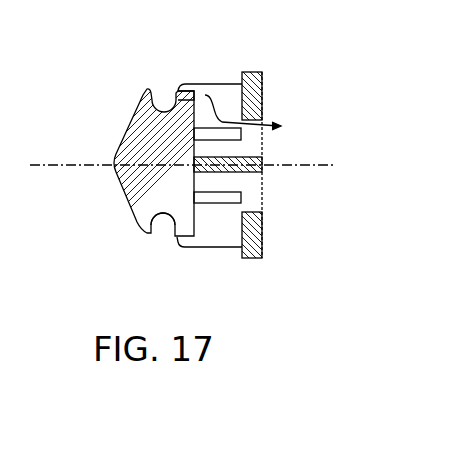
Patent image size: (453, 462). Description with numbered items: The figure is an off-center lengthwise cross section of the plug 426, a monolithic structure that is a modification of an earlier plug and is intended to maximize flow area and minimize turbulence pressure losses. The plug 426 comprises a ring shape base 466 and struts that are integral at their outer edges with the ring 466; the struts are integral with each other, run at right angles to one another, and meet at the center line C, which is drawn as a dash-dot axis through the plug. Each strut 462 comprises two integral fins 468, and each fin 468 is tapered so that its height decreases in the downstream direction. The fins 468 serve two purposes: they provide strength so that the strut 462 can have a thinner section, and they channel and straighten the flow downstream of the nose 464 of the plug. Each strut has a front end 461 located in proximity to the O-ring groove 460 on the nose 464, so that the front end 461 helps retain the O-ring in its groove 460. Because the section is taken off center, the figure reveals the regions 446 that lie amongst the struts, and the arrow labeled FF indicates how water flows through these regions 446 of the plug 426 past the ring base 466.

The plug 426 is at (129, 52).
The regions 446 is at (223, 98).
The front end 461 is at (184, 86).
The ring shape base 466 is at (257, 74).
The fins 468 is at (237, 192).
The strut 462 is at (218, 247).
The O-ring groove 460 is at (168, 232).
The nose 464 is at (122, 192).
The center line C is at (55, 163).